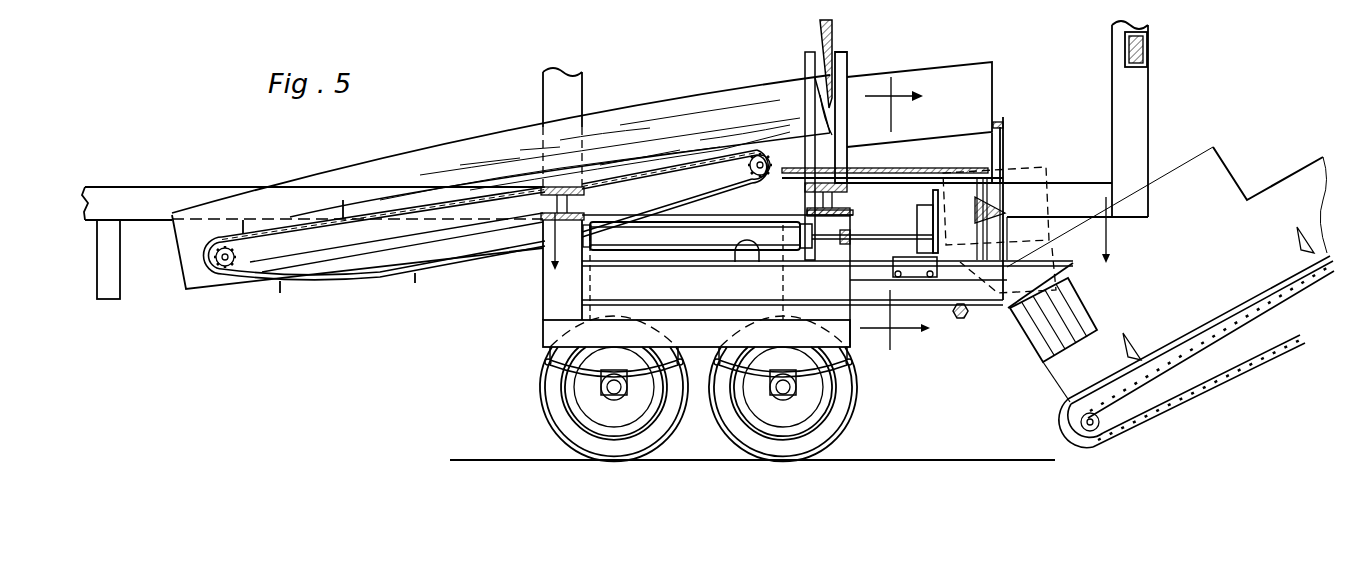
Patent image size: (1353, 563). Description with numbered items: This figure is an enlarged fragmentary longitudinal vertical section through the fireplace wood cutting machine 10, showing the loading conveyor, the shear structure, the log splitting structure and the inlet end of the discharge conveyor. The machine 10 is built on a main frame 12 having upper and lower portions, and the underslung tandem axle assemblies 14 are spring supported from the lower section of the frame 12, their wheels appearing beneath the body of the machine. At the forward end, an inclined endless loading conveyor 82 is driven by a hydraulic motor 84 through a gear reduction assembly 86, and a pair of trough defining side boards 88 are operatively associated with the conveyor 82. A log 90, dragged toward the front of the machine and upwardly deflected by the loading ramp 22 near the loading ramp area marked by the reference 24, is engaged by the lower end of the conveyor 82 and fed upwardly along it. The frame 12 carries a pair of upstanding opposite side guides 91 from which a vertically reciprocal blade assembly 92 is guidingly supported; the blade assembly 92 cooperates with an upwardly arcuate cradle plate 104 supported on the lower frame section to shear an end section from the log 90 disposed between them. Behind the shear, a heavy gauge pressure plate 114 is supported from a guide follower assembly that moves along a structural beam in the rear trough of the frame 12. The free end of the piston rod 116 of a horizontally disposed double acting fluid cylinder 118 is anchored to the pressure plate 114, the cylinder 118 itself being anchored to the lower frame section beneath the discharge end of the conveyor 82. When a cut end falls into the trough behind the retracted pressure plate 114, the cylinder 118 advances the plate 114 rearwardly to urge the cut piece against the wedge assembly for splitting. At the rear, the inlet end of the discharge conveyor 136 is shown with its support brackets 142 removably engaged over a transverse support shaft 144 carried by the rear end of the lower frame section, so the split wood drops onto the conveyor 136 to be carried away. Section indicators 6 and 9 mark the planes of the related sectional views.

The fireplace wood cutting machine 10 is at (520, 105).
The main frame 12 is at (1152, 115).
The underslung tandem axle assemblies 14 is at (600, 389).
The loading ramp 22 is at (135, 13).
The log stop 24 is at (180, 13).
The inclined endless loading conveyor 82 is at (393, 277).
The hydraulic motor 84 is at (748, 256).
The gear reduction assembly 86 is at (735, 171).
The trough defining side boards 88 is at (367, 162).
The log 90 is at (683, 113).
The upstanding opposite side guides 91 is at (848, 62).
The vertically reciprocal blade assembly 92 is at (805, 32).
The upwardly arcuate cradle plate 104 is at (838, 158).
The heavy gauge pressure plate 114 is at (940, 197).
The piston rod 116 is at (884, 231).
The horizontally disposed double acting fluid cylinder 118 is at (663, 237).
The discharge conveyor 136 is at (1255, 185).
The support brackets 142 is at (987, 310).
The transverse support shaft 144 is at (960, 320).
The section line 6- 6 is at (832, 250).
The section line 9- 9 is at (904, 215).